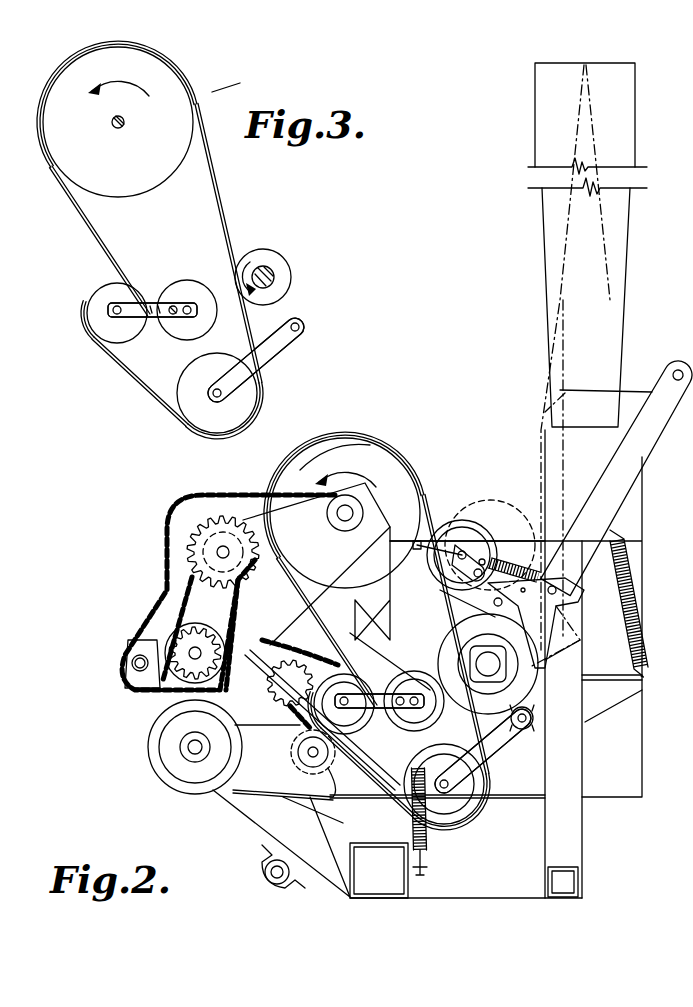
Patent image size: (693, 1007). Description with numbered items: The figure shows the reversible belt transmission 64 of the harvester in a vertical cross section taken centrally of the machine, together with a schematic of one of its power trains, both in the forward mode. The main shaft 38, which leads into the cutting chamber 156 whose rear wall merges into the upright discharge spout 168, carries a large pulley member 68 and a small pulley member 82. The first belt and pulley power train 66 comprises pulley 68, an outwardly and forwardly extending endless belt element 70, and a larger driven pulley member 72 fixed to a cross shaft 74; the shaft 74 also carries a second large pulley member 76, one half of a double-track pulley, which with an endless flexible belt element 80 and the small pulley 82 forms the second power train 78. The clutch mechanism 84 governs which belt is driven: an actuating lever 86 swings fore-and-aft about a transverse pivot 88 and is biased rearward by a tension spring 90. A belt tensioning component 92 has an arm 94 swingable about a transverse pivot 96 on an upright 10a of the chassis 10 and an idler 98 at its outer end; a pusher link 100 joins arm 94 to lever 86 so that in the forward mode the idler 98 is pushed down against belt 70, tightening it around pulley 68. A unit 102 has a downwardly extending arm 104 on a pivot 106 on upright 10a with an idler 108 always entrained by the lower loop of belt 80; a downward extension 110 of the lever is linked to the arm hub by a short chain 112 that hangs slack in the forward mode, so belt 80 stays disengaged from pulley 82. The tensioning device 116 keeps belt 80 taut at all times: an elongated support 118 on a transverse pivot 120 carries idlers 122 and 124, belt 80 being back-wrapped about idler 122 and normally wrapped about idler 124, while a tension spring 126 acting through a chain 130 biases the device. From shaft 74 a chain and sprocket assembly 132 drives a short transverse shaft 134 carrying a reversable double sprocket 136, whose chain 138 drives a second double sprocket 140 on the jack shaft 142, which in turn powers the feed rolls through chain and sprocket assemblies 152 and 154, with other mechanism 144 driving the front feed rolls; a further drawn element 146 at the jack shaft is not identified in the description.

In FIG. 2, the chassis 10 is at (368, 898).
In FIG. 2, the upright 10a is at (570, 830).
In FIG. 3, the main shaft 38 is at (276, 279).
In FIG. 2, the main shaft 38 is at (488, 664).
In FIG. 2, the reversible belt transmission 64 is at (440, 492).
In FIG. 2, the first belt and pulley power train 66 is at (302, 462).
In FIG. 2, the large pulley member 68 is at (465, 762).
In FIG. 2, the endless belt element 70 is at (440, 588).
In FIG. 2, the larger driven pulley member 72 is at (344, 495).
In FIG. 3, the cross shaft 74 is at (124, 128).
In FIG. 2, the cross shaft 74 is at (345, 527).
In FIG. 3, the second large pulley member 76 is at (147, 190).
In FIG. 3, the second power train 78 is at (199, 98).
In FIG. 3, the endless flexible belt element 80 is at (218, 196).
In FIG. 2, the endless flexible belt element 80 is at (383, 662).
In FIG. 3, the small pulley member 82 is at (270, 255).
In FIG. 2, the clutch mechanism 84 is at (588, 564).
In FIG. 2, the actuating lever 86 is at (605, 391).
In FIG. 2, the transverse pivot 88 is at (560, 594).
In FIG. 2, the tension spring 90 is at (648, 598).
In FIG. 2, the belt tensioning component 92 is at (452, 524).
In FIG. 2, the arm 94 is at (417, 543).
In FIG. 2, the transverse pivot 96 is at (505, 602).
In FIG. 2, the idler 98 is at (500, 500).
In FIG. 2, the pusher link 100 is at (535, 570).
In FIG. 3, the unit 102 is at (272, 369).
In FIG. 2, the unit 102 is at (482, 771).
In FIG. 3, the arm 104 is at (303, 339).
In FIG. 2, the arm 104 is at (484, 750).
In FIG. 3, the pivot 106 is at (299, 324).
In FIG. 2, the pivot 106 is at (547, 731).
In FIG. 3, the idler 108 is at (192, 418).
In FIG. 2, the idler 108 is at (444, 804).
In FIG. 2, the downward extension 110 is at (560, 652).
In FIG. 2, the chain 112 is at (546, 742).
In FIG. 3, the tensioning device 116 is at (140, 296).
In FIG. 2, the tensioning device 116 is at (344, 735).
In FIG. 3, the elongated support 118 is at (108, 330).
In FIG. 2, the elongated support 118 is at (357, 696).
In FIG. 3, the transverse pivot 120 is at (152, 310).
In FIG. 2, the transverse pivot 120 is at (379, 722).
In FIG. 3, the idler 122 is at (186, 336).
In FIG. 2, the idler 122 is at (396, 684).
In FIG. 3, the idler 124 is at (98, 300).
In FIG. 2, the idler 124 is at (300, 745).
In FIG. 2, the tension spring 126 is at (397, 821).
In FIG. 2, the chain 130 is at (336, 795).
In FIG. 2, the chain and sprocket assembly 132 is at (182, 505).
In FIG. 2, the short transverse shaft 134 is at (232, 550).
In FIG. 2, the reversable double sprocket 136 is at (244, 560).
In FIG. 2, the chain 138 is at (240, 596).
In FIG. 2, the second double sprocket 140 is at (178, 645).
In FIG. 2, the jack shaft 142 is at (170, 690).
In FIG. 2, the other mechanism 144 is at (180, 747).
In FIG. 2, the pulley 146 is at (162, 762).
In FIG. 2, the chain and sprocket assembly 152 is at (126, 655).
In FIG. 2, the chain and sprocket assembly 154 is at (316, 606).
In FIG. 2, the cutting chamber 156 is at (665, 733).
In FIG. 2, the upright discharge spout 168 is at (614, 278).